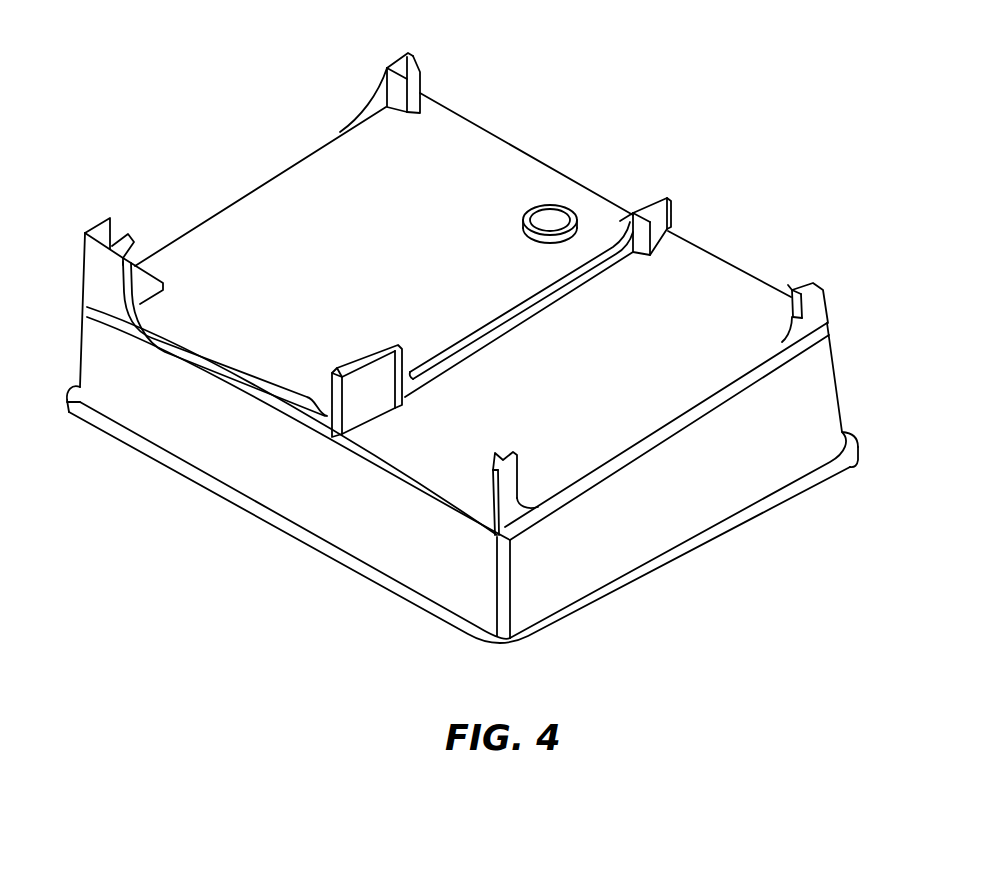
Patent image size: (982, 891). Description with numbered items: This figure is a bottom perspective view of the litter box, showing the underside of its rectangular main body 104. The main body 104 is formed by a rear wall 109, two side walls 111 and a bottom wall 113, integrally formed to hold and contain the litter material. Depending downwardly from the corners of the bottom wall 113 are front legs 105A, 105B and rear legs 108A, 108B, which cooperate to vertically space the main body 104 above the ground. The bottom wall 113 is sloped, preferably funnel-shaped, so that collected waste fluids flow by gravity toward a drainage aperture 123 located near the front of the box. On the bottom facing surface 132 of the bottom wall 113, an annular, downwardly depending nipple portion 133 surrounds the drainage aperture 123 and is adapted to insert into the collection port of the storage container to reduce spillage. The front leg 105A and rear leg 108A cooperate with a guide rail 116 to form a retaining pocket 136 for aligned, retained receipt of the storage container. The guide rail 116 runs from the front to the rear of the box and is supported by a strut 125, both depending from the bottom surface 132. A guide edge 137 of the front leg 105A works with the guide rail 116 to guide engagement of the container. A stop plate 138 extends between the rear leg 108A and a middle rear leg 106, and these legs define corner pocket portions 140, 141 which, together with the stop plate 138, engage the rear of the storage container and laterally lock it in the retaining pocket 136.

The main body 104 is at (857, 370).
The front leg 105A is at (412, 56).
The front leg 105B is at (813, 310).
The middle rear leg 106 is at (327, 422).
The rear leg 108A is at (92, 265).
The rear leg 108B is at (505, 493).
The rear wall 109 is at (353, 518).
The side wall 111 is at (687, 510).
The bottom wall 113 is at (497, 133).
The guide rail 116 is at (660, 221).
The drainage aperture 123 is at (540, 218).
The strut 125 is at (670, 233).
The bottom facing surface 132 is at (523, 187).
The nipple portion 133 is at (553, 203).
The retaining pocket 136 is at (372, 128).
The guide edge 137 is at (422, 91).
The stop plate 138 is at (207, 365).
The corner pocket portion 140 is at (340, 373).
The corner pocket portion 141 is at (122, 237).